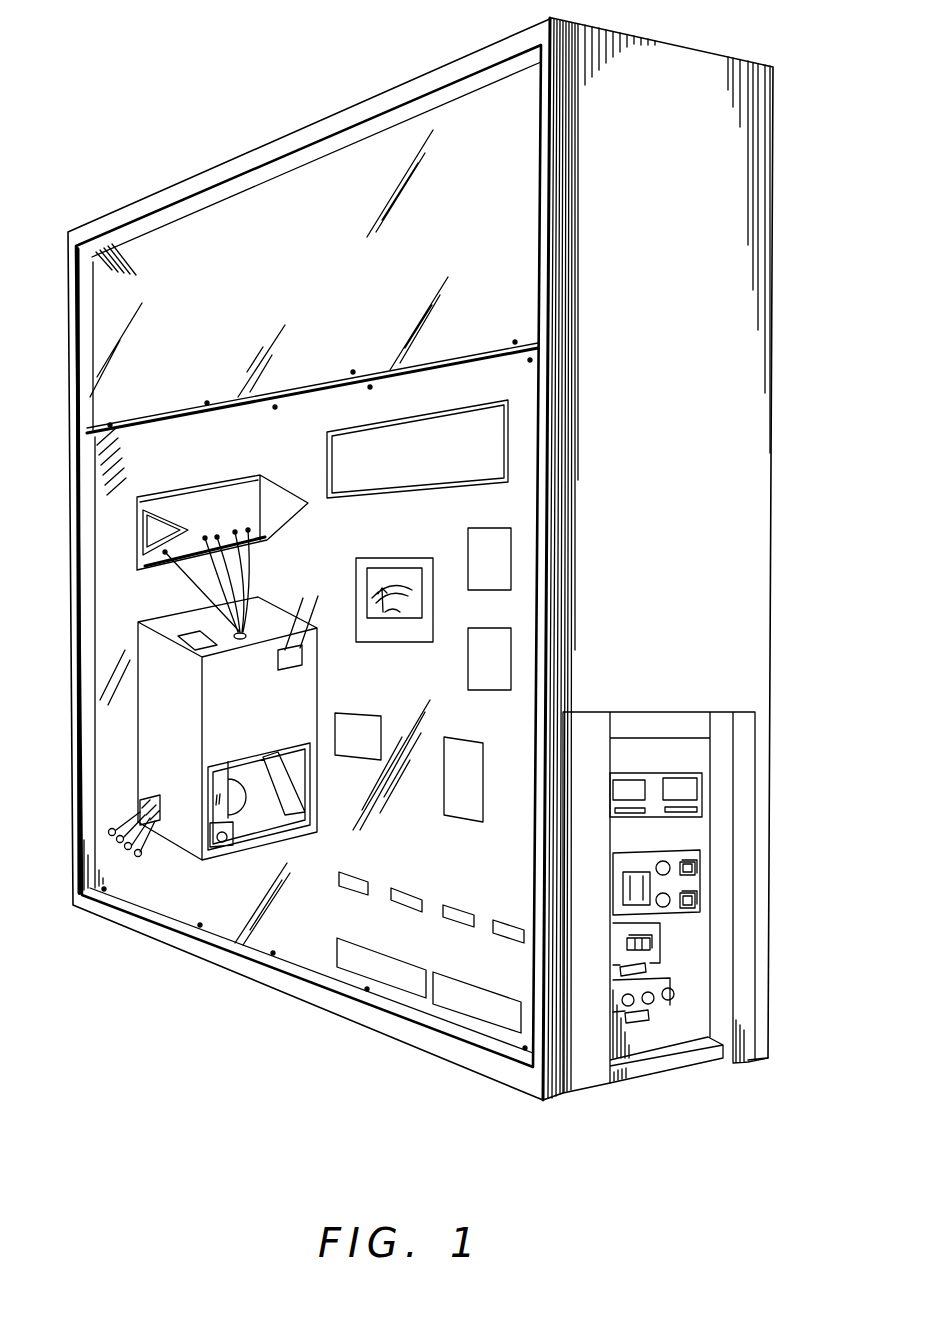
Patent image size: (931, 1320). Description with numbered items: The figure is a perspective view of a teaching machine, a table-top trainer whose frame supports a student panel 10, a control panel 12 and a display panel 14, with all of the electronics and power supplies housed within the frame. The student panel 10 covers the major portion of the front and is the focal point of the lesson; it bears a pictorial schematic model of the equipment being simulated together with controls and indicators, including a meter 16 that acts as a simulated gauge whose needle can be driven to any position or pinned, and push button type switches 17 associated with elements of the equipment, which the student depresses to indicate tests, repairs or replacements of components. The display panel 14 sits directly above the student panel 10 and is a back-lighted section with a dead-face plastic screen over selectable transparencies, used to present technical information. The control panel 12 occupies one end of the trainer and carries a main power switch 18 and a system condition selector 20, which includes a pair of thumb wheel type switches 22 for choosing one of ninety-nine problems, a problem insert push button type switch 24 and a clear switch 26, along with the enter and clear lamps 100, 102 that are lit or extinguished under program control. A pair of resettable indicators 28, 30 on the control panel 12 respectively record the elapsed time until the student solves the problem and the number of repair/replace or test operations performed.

The student panel 10 is at (193, 903).
The control panel 12 is at (692, 883).
The display panel 14 is at (294, 280).
The meter 16 is at (391, 558).
The push button type switches 17 is at (222, 843).
The main power switch 18 is at (651, 941).
The system condition selector 20 is at (703, 910).
The thumb wheel type switches 22 is at (633, 901).
The problem insert push button type switch 24 is at (696, 862).
The clear switch 26 is at (699, 899).
The elapsed time indicator 28 is at (628, 780).
The replace/repair indicator 30 is at (683, 778).
The enter lamp 100 is at (668, 862).
The clear lamp 102 is at (669, 896).